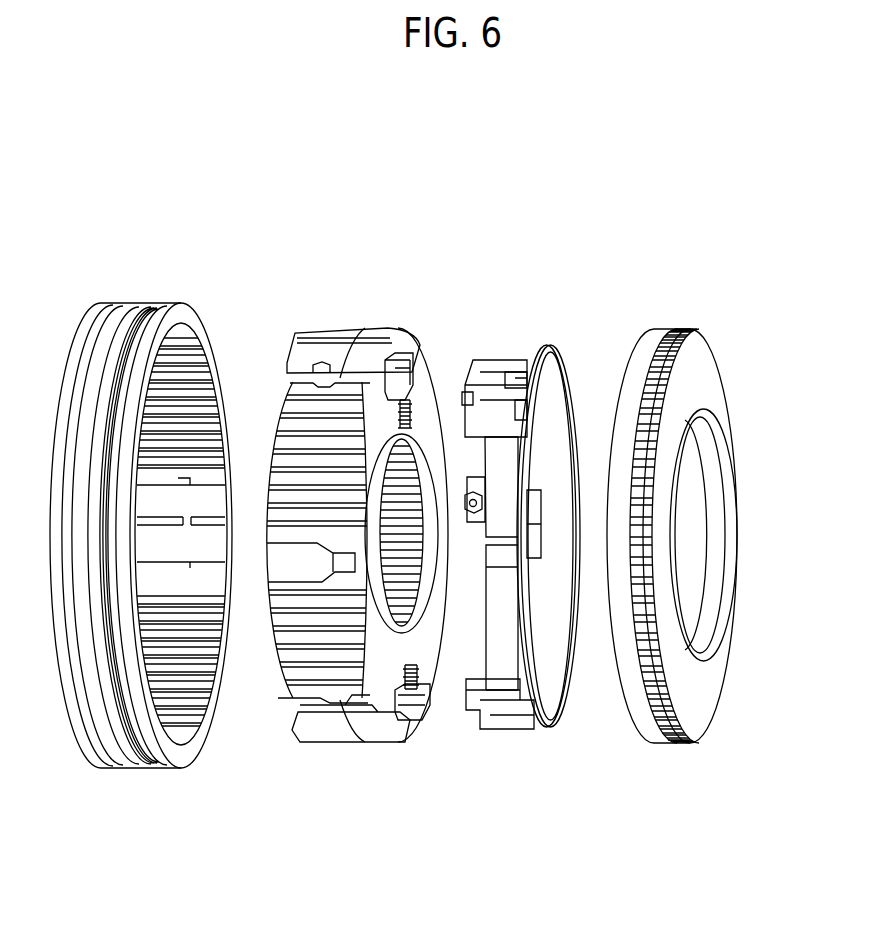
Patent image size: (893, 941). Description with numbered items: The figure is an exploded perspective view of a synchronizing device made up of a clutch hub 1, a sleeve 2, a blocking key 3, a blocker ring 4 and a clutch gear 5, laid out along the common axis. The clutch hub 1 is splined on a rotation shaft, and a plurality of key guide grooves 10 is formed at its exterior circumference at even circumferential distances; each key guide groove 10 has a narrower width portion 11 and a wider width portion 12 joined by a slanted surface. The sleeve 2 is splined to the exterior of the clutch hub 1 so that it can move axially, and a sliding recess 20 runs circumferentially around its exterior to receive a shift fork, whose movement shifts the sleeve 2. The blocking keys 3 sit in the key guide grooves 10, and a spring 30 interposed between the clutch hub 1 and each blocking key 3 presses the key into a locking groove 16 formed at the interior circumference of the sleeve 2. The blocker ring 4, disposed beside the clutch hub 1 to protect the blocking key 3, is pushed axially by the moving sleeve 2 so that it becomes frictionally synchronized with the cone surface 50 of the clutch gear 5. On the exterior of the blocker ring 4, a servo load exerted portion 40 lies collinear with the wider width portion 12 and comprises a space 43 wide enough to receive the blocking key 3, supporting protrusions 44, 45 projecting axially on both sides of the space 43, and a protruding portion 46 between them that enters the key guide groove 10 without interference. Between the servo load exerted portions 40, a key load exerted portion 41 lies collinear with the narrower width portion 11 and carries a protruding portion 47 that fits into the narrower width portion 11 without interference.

The clutch hub 1 is at (332, 519).
The sleeve 2 is at (154, 479).
The blocking key 3 is at (437, 496).
The blocker ring 4 is at (526, 514).
The clutch gear 5 is at (680, 492).
The key guide groove 10 is at (283, 368).
The narrower width portion 11 is at (298, 368).
The wider width portion 12 is at (357, 360).
The locking groove 16 is at (190, 514).
The sliding recess 20 is at (119, 323).
The spring 30 is at (422, 400).
The servo load exerted portion 40 is at (487, 358).
The key load exerted portion 41 is at (503, 582).
The space 43 is at (472, 397).
The supporting protrusion 44 is at (492, 392).
The supporting protrusion 45 is at (461, 502).
The protruding portion 46 is at (517, 386).
The protruding portion 47 is at (510, 553).
The cone surface 50 is at (636, 364).